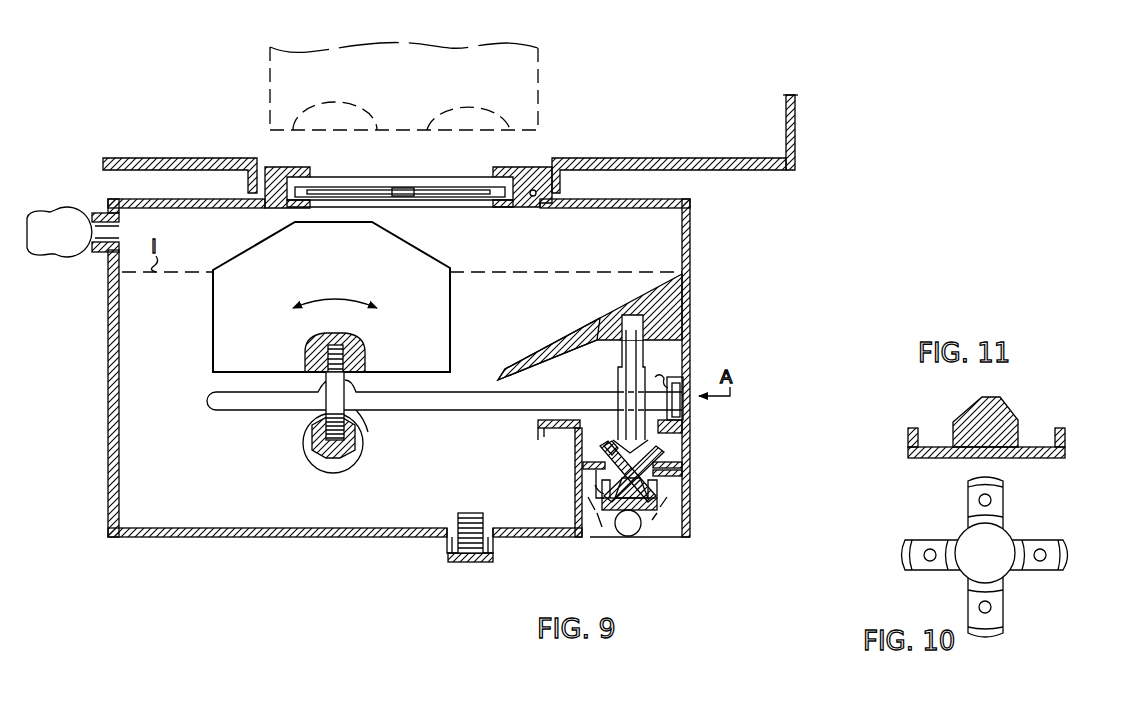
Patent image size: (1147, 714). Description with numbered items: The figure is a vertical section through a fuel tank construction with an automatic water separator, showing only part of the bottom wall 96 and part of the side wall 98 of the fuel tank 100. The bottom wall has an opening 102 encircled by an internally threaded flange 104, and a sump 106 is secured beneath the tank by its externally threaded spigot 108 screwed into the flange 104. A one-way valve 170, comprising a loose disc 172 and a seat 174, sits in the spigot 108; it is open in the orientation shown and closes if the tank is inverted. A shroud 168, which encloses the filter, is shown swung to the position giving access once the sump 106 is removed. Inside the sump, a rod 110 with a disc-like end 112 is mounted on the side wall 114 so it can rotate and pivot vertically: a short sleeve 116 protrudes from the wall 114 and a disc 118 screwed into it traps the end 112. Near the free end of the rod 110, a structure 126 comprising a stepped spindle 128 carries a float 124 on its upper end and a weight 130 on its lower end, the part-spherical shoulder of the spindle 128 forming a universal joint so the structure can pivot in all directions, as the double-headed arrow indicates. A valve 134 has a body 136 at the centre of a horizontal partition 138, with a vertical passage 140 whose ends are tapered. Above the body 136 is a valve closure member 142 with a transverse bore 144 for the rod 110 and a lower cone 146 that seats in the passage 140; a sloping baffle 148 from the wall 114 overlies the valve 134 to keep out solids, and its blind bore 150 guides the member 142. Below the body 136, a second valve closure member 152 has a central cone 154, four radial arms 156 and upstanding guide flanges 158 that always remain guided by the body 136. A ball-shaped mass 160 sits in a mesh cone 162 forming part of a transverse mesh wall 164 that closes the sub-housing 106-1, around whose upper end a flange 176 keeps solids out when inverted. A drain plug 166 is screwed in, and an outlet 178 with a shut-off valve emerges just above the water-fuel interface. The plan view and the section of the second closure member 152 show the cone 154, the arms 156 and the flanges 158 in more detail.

In FIG. 9, the bottom wall 96 is at (750, 172).
In FIG. 9, the side wall 98 is at (796, 153).
In FIG. 9, the fuel tank 100 is at (727, 132).
In FIG. 9, the opening 102 is at (546, 159).
In FIG. 9, the internally threaded flange 104 is at (561, 187).
In FIG. 9, the sump 106 is at (704, 317).
In FIG. 9, the sub-housing 106-1 is at (575, 487).
In FIG. 9, the externally threaded spigot 108 is at (532, 196).
In FIG. 9, the rod 110 is at (440, 413).
In FIG. 9, the disc-like end 112 is at (677, 420).
In FIG. 9, the side wall 114 is at (687, 522).
In FIG. 9, the short sleeve 116 is at (686, 433).
In FIG. 9, the disc 118 is at (655, 380).
In FIG. 9, the float 124 is at (452, 322).
In FIG. 9, the mounting structure 126 is at (322, 383).
In FIG. 9, the spindle 128 is at (346, 410).
In FIG. 9, the weight 130 is at (352, 462).
In FIG. 9, the valve 134 is at (572, 472).
In FIG. 9, the body 136 is at (672, 483).
In FIG. 9, the horizontal partition 138 is at (578, 495).
In FIG. 9, the vertical passage 140 is at (670, 472).
In FIG. 9, the valve closure member 142 is at (616, 440).
In FIG. 9, the transverse bore 144 is at (632, 387).
In FIG. 9, the cone 146 is at (612, 442).
In FIG. 9, the sloping baffle 148 is at (570, 333).
In FIG. 9, the blind bore 150 is at (646, 313).
In FIG. 9, the second valve closure member 152 is at (690, 494).
In FIG. 11, the second valve closure member 152 is at (1023, 436).
In FIG. 9, the central cone 154 is at (663, 505).
In FIG. 11, the central cone 154 is at (994, 400).
In FIG. 11, the radially extending arms 156 is at (1053, 463).
In FIG. 11, the guide flanges 158 is at (1067, 440).
In FIG. 10, the guide flanges 158 is at (1070, 553).
In FIG. 9, the mass 160 is at (622, 538).
In FIG. 9, the mesh cone 162 is at (588, 537).
In FIG. 9, the transverse mesh wall 164 is at (666, 538).
In FIG. 9, the drain plug 166 is at (463, 563).
In FIG. 9, the shroud 168 is at (268, 98).
In FIG. 9, the one-way valve 170 is at (408, 197).
In FIG. 9, the loose disc 172 is at (350, 187).
In FIG. 9, the seat 174 is at (490, 177).
In FIG. 9, the flange 176 is at (538, 423).
In FIG. 9, the outlet 178 is at (90, 258).